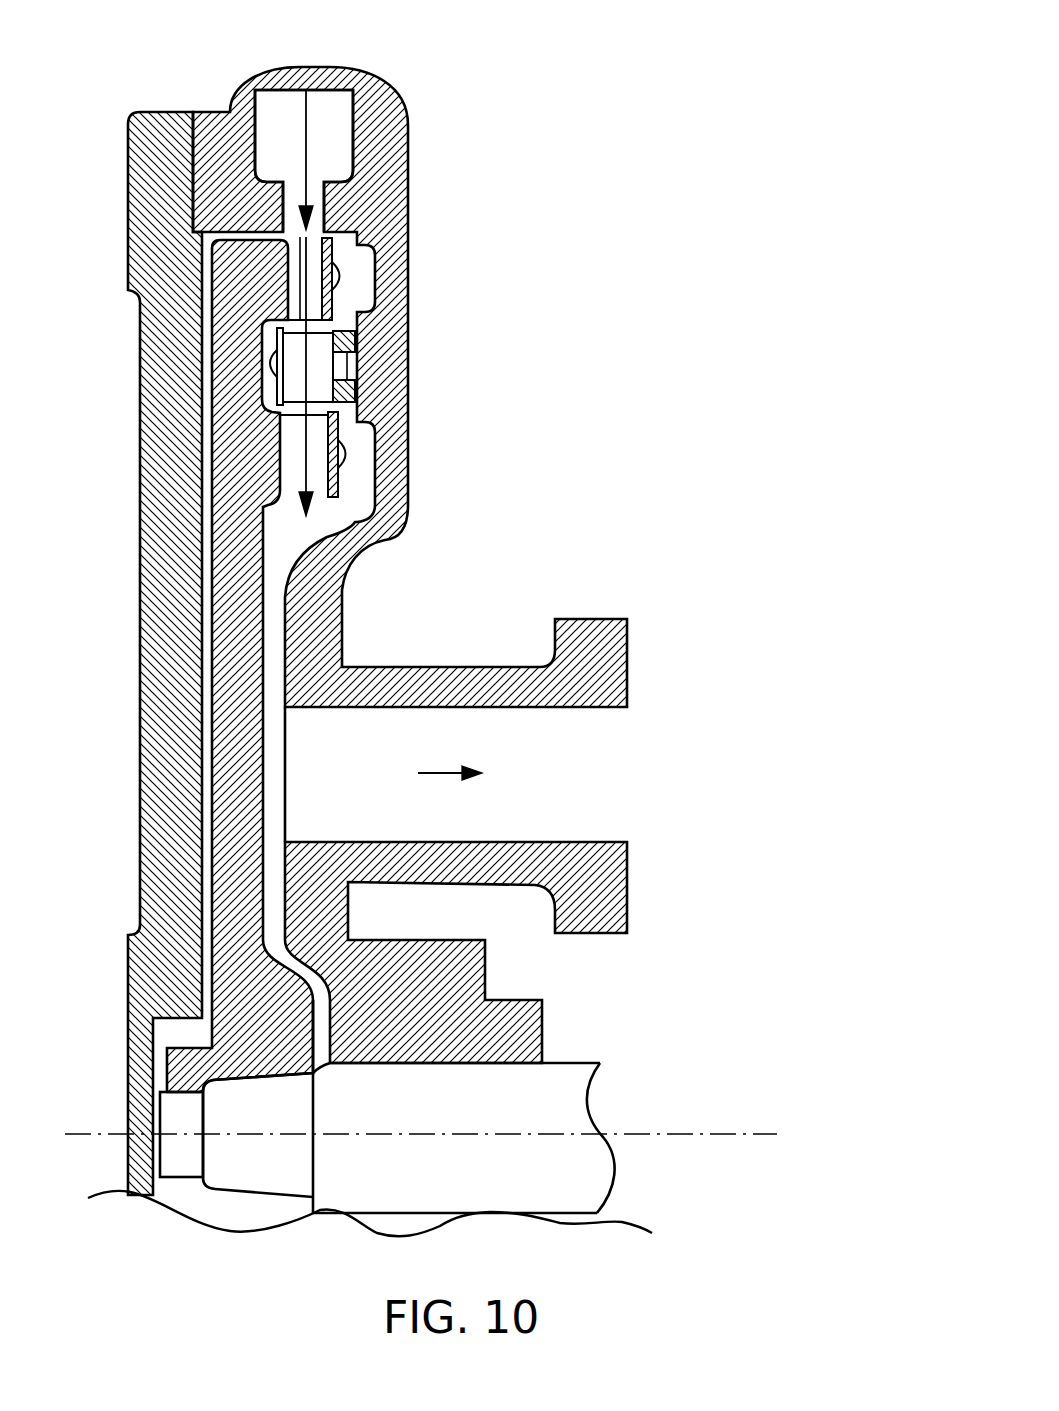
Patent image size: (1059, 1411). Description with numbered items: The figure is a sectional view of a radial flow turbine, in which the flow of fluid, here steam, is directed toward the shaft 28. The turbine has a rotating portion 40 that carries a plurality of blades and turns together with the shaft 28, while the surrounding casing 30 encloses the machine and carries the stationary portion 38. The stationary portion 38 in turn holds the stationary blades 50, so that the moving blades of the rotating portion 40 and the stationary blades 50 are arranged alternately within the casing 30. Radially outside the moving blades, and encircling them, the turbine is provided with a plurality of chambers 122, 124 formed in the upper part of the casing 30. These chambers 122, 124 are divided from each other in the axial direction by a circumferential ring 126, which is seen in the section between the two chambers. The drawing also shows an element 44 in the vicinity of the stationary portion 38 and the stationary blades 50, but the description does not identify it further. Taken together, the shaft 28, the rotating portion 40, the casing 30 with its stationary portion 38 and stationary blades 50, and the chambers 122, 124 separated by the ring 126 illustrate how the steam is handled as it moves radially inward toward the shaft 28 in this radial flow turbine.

The shaft 28 is at (471, 1123).
The casing 30 is at (388, 528).
The rotating portion 40 is at (222, 676).
The pin 44 is at (315, 282).
The stationary blades 50 is at (318, 348).
The stationary portion 38 is at (340, 390).
The chamber 122 is at (335, 98).
The chamber 124 is at (277, 102).
The circumferential ring 126 is at (318, 98).